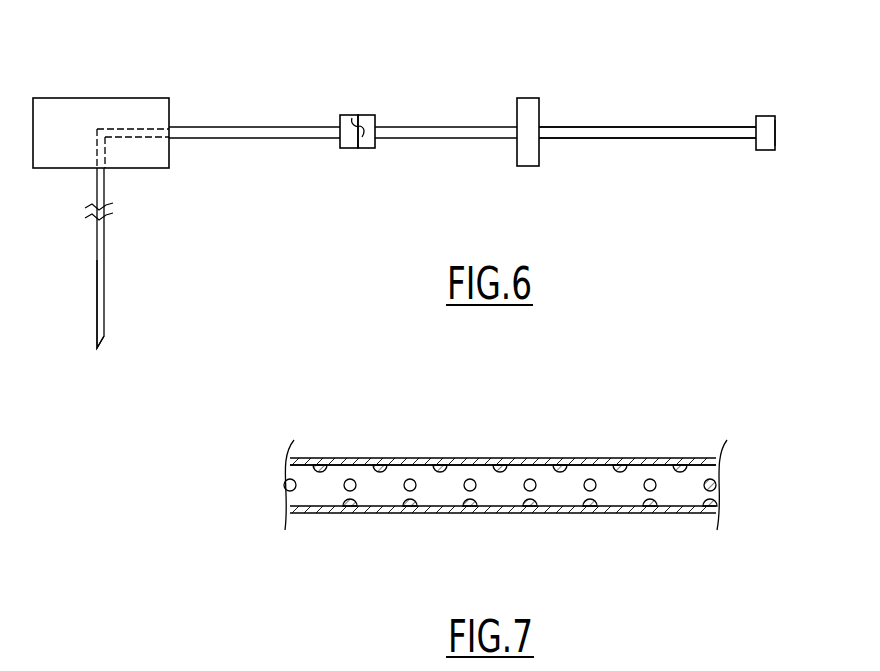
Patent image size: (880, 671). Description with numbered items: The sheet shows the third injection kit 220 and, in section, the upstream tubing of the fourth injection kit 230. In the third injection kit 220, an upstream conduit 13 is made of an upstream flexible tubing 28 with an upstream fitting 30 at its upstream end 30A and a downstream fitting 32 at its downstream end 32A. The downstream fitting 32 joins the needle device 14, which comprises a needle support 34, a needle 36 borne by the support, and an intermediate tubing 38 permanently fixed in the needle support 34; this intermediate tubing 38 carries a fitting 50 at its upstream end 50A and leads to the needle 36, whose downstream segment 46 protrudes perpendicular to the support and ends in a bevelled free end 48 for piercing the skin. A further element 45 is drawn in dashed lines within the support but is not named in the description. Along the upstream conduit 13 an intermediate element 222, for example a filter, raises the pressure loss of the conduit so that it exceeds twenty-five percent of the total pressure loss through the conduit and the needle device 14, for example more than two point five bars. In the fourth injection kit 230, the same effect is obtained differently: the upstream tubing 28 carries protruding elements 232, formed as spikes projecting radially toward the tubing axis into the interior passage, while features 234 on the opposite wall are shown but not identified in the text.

In FIG. 6, the upstream conduit 13 is at (648, 156).
In FIG. 7, the upstream conduit 13 is at (540, 428).
In FIG. 6, the needle device 14 is at (270, 98).
In FIG. 6, the upstream flexible tubing 28 is at (632, 126).
In FIG. 7, the upstream flexible tubing 28 is at (400, 456).
In FIG. 6, the upstream fitting 30 is at (765, 128).
In FIG. 6, the upstream end 30A is at (775, 135).
In FIG. 6, the downstream fitting 32 is at (367, 148).
In FIG. 6, the downstream end 32A is at (360, 126).
In FIG. 6, the needle support 34 is at (42, 97).
In FIG. 6, the needle 36 is at (95, 283).
In FIG. 6, the intermediate tubing 38 is at (246, 127).
In FIG. 6, the internal conduit 45 is at (147, 139).
In FIG. 6, the downstream segment 46 is at (105, 300).
In FIG. 6, the bevelled free end 48 is at (105, 336).
In FIG. 6, the fitting 50 is at (344, 148).
In FIG. 6, the upstream end 50A is at (352, 118).
In FIG. 6, the third injection kit 220 is at (658, 97).
In FIG. 6, the intermediate element 222 is at (527, 167).
In FIG. 7, the fourth injection kit 230 is at (670, 437).
In FIG. 7, the protruding elements 232 is at (535, 489).
In FIG. 7, the protrusions 234 is at (379, 510).